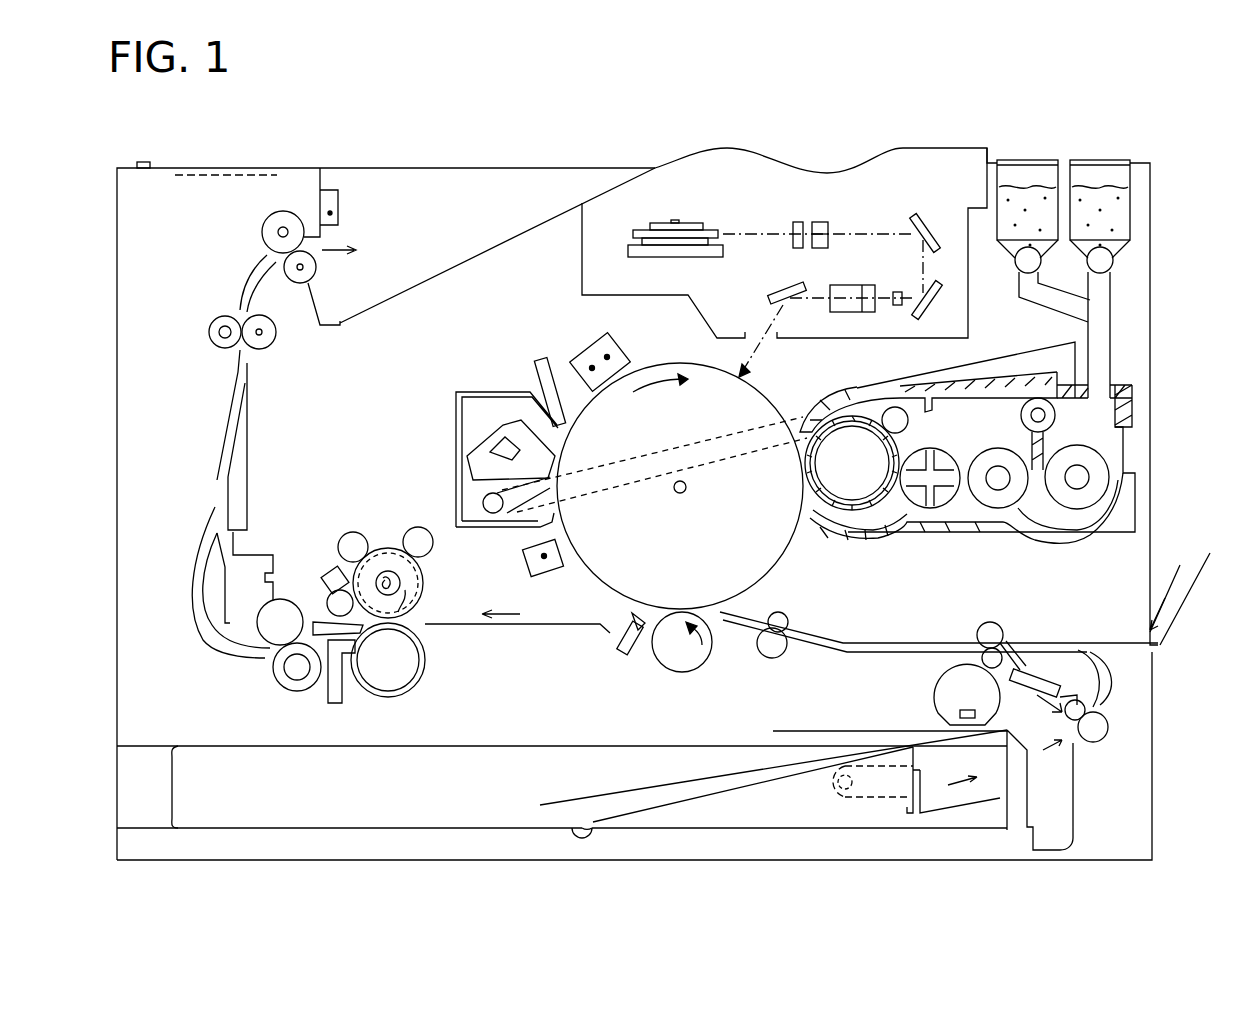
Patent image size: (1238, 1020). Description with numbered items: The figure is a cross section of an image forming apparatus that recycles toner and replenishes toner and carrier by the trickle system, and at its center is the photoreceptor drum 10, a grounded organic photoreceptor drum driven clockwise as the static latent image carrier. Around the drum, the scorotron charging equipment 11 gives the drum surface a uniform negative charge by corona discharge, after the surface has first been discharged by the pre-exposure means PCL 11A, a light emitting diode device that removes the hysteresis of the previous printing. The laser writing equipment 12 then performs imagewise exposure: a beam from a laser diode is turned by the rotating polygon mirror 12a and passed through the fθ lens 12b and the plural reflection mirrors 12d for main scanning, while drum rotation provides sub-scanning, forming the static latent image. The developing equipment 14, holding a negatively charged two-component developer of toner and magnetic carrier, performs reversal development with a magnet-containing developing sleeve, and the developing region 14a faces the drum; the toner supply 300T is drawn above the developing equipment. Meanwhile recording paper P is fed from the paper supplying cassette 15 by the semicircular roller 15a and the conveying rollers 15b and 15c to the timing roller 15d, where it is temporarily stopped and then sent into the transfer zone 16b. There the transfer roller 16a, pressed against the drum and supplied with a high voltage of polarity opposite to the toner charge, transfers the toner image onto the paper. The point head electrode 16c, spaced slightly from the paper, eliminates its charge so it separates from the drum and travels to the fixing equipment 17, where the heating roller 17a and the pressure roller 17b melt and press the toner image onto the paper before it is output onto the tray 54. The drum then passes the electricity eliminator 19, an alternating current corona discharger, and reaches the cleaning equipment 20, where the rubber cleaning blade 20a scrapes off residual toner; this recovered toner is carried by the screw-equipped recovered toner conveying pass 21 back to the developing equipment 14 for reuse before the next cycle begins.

The photoreceptor drum 10 is at (763, 386).
The scorotron charging equipment 11 is at (610, 332).
The pre-exposure means PCL 11A is at (533, 371).
The laser writing equipment 12 is at (762, 235).
The rotating polygon mirror 12a is at (712, 232).
The fθ lens 12b is at (820, 222).
The reflection mirrors 12d is at (921, 292).
The developing equipment 14 is at (937, 524).
The developing region 14a is at (801, 448).
The paper supplying cassette 15 is at (450, 820).
The semicircular roller 15a is at (958, 677).
The conveying roller 15b is at (1108, 727).
The conveying roller 15c is at (993, 622).
The timing roller 15d is at (770, 660).
The transfer roller 16a is at (683, 673).
The transfer zone 16b is at (680, 612).
The point head electrode 16c is at (620, 660).
The fixing equipment 17 is at (376, 610).
The heating roller 17a is at (428, 583).
The pressure roller 17b is at (421, 670).
The electricity eliminator 19 is at (527, 563).
The cleaning equipment 20 is at (515, 457).
The rubber cleaning blade 20a is at (553, 455).
The recovered toner conveying pass 21 is at (1003, 362).
The tray 54 is at (410, 285).
The toner supply unit 300T is at (1067, 303).
The recording paper P is at (918, 735).